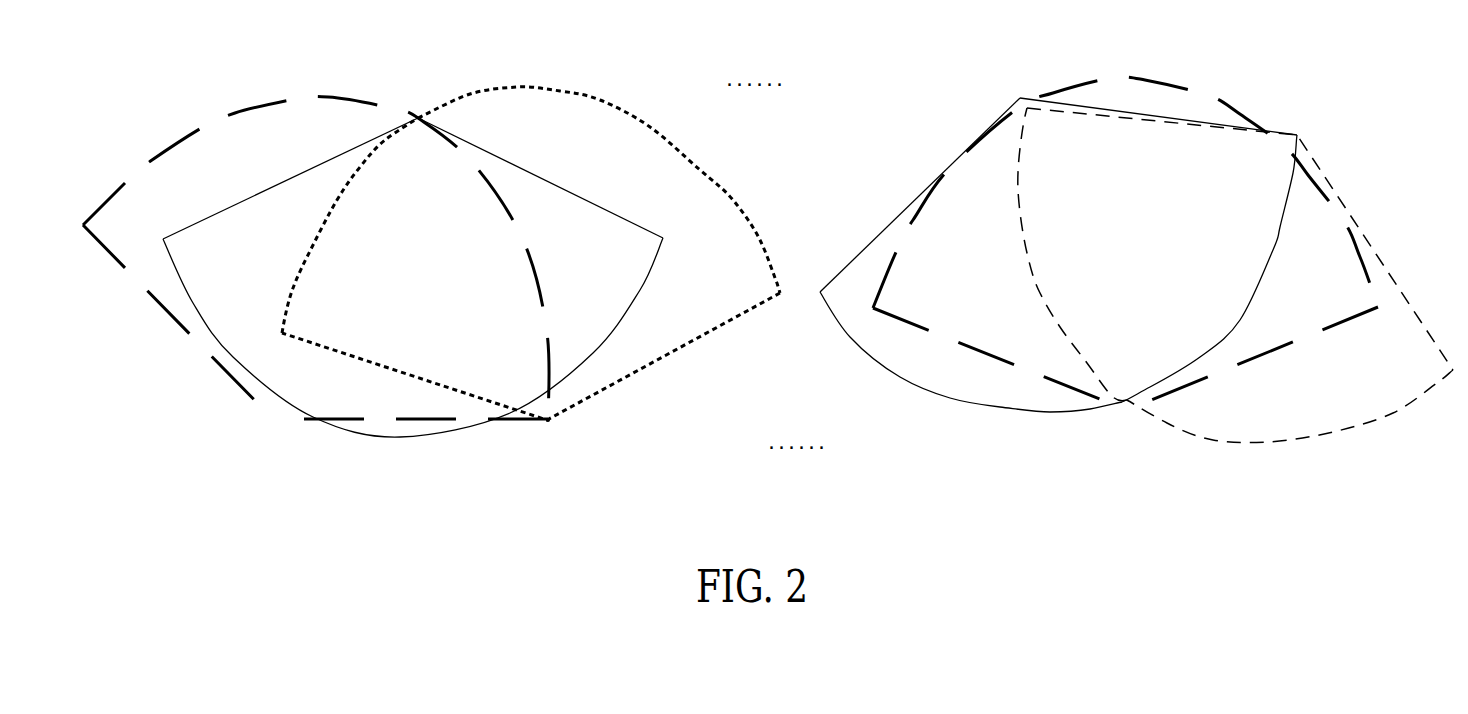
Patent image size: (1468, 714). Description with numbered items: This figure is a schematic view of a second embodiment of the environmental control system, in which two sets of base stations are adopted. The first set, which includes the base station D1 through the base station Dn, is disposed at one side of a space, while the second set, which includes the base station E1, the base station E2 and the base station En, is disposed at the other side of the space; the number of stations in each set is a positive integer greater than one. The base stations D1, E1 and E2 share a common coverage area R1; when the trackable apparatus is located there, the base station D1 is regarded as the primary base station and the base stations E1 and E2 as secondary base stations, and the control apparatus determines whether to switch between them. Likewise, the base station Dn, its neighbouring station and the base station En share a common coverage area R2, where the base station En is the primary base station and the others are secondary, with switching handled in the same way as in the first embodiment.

The base station D1 is at (413, 245).
The base station E1 is at (316, 286).
The base station E2 is at (551, 445).
The common coverage area R1 is at (531, 253).
The base station Dn is at (1192, 238).
The base station En is at (1125, 272).
The common coverage area R2 is at (1235, 275).